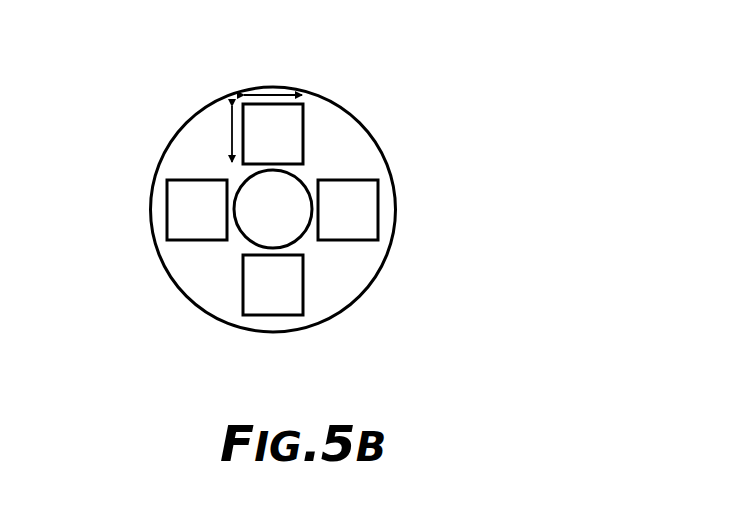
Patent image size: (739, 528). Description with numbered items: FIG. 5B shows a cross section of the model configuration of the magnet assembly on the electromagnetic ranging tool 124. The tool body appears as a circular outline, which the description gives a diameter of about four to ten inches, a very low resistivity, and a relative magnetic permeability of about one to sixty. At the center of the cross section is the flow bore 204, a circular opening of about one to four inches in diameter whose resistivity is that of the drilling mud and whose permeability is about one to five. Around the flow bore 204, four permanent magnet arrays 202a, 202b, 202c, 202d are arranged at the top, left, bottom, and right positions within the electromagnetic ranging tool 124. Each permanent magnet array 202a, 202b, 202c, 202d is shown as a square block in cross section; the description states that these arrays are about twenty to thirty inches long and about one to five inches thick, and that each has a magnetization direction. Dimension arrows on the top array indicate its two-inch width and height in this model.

The electromagnetic ranging tool 124 is at (338, 133).
The flow bore 204 is at (278, 225).
The permanent magnet array 202a is at (304, 115).
The permanent magnet array 202b is at (167, 195).
The permanent magnet array 202c is at (273, 315).
The permanent magnet array 202d is at (378, 212).